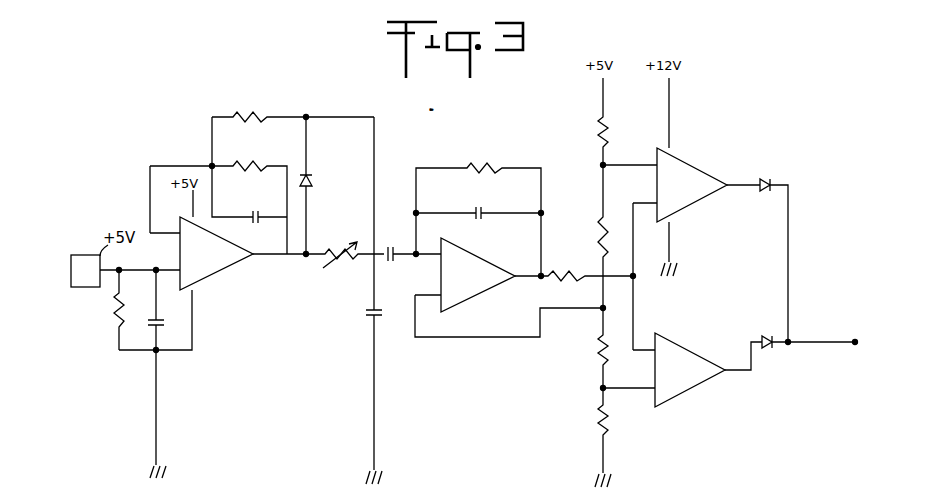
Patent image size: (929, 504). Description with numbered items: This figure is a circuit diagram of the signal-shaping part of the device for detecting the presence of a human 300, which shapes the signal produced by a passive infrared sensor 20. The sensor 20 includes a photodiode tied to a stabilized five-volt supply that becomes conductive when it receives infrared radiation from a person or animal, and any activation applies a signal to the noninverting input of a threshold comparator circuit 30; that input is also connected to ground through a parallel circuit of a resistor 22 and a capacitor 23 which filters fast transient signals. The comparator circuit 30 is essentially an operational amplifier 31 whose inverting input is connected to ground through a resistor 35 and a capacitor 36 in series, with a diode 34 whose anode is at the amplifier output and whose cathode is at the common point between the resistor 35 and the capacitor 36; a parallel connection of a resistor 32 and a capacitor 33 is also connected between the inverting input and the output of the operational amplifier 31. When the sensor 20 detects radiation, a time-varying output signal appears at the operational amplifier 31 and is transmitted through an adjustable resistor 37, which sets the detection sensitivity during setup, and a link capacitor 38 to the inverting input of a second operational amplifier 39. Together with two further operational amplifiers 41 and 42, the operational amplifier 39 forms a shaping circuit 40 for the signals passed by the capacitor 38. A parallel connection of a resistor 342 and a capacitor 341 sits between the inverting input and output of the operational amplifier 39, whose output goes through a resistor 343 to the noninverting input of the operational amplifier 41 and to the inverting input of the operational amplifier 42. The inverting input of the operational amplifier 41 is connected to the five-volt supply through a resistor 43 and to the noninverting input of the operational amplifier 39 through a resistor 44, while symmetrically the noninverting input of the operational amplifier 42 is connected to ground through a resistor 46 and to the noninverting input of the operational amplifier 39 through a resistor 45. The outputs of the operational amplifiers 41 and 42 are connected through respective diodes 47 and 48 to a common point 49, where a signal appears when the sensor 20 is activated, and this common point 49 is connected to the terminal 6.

The passive infrared sensor 20 is at (80, 256).
The resistor 22 is at (115, 327).
The capacitor 23 is at (162, 328).
The threshold comparator circuit 30 is at (267, 297).
The operational amplifier 31 is at (237, 272).
The resistor 32 is at (258, 164).
The capacitor 33 is at (257, 212).
The diode 34 is at (312, 182).
The resistor 35 is at (263, 116).
The capacitor 36 is at (368, 318).
The adjustable resistor 37 is at (345, 258).
The link capacitor 38 is at (391, 260).
The second operational amplifier 39 is at (472, 296).
The shaping circuit 40 is at (583, 401).
The operational amplifier 41 is at (700, 168).
The operational amplifier 42 is at (693, 348).
The resistor 43 is at (600, 125).
The resistor 44 is at (600, 224).
The resistor 45 is at (600, 364).
The resistor 46 is at (598, 433).
The diode 47 is at (771, 181).
The diode 48 is at (766, 350).
The common point 49 is at (790, 338).
The device for detecting the presence of a human 300 is at (287, 398).
The capacitor 341 is at (484, 212).
The resistor 342 is at (500, 166).
The resistor 343 is at (585, 272).
The terminal 6 is at (855, 342).